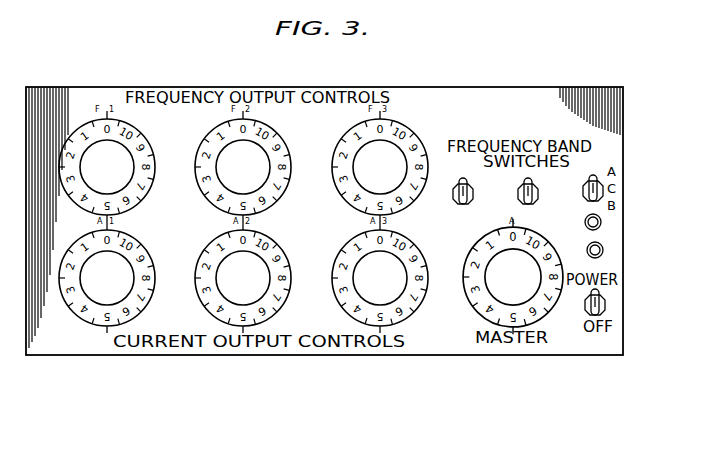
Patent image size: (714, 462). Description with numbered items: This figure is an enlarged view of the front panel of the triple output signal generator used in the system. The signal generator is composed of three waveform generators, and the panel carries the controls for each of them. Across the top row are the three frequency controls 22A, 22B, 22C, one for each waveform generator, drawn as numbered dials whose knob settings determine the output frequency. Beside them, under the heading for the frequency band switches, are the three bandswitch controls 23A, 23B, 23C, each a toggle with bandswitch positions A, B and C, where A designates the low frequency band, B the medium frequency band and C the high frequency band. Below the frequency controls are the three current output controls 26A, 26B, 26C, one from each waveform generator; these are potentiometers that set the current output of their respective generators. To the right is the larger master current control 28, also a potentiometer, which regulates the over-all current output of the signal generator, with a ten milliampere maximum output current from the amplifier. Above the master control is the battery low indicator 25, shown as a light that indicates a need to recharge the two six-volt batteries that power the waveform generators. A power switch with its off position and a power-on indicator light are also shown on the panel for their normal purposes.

The frequency control 22A is at (138, 130).
The frequency control 22B is at (275, 131).
The frequency control 22C is at (412, 131).
The current output control 26A is at (138, 242).
The current output control 26B is at (275, 243).
The current output control 26C is at (412, 243).
The master current control 28 is at (473, 305).
The bandswitch control 23A is at (470, 181).
The bandswitch control 23B is at (535, 181).
The bandswitch control 23C is at (588, 196).
The battery low indicator 25 is at (585, 222).